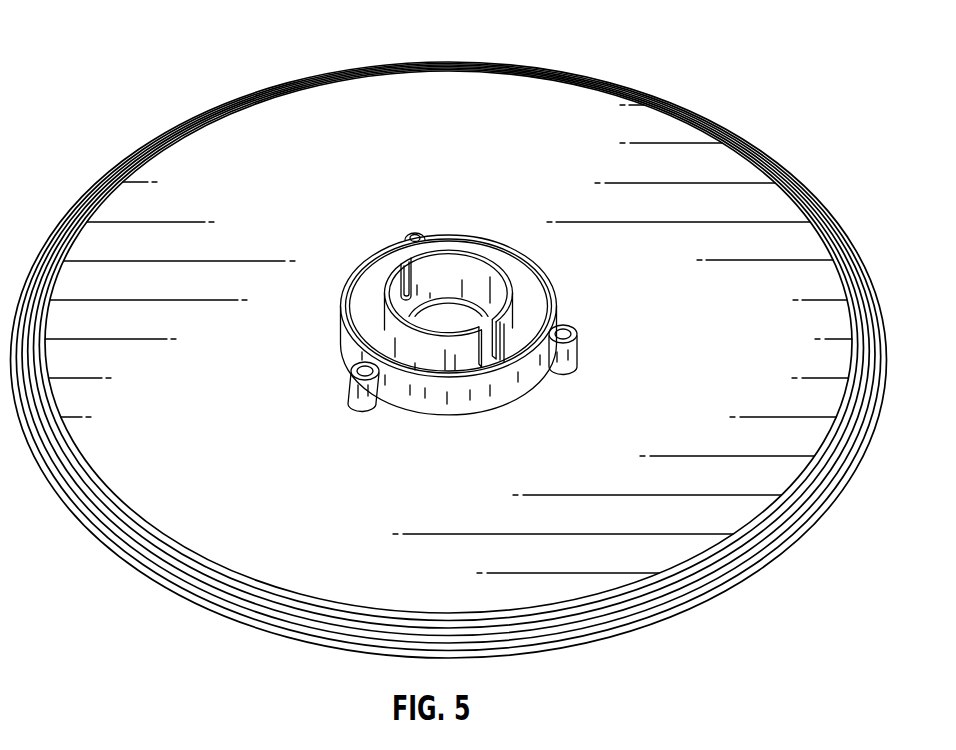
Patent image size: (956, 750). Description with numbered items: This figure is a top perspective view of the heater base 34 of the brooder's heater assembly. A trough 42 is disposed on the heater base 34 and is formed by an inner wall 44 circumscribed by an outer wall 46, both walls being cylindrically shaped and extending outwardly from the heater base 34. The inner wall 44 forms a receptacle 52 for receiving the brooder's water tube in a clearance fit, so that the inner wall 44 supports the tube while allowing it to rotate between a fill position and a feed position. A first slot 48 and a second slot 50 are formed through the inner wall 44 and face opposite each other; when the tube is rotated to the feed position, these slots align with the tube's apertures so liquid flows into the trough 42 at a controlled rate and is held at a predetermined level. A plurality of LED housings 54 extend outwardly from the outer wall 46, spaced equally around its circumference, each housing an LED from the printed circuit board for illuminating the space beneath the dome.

The heater base 34 is at (283, 118).
The trough 42 is at (525, 322).
The inner wall 44 is at (457, 365).
The outer wall 46 is at (343, 337).
The first slot 48 is at (502, 352).
The second slot 50 is at (397, 275).
The receptacle 52 is at (438, 312).
The LED housings 54 is at (417, 230).